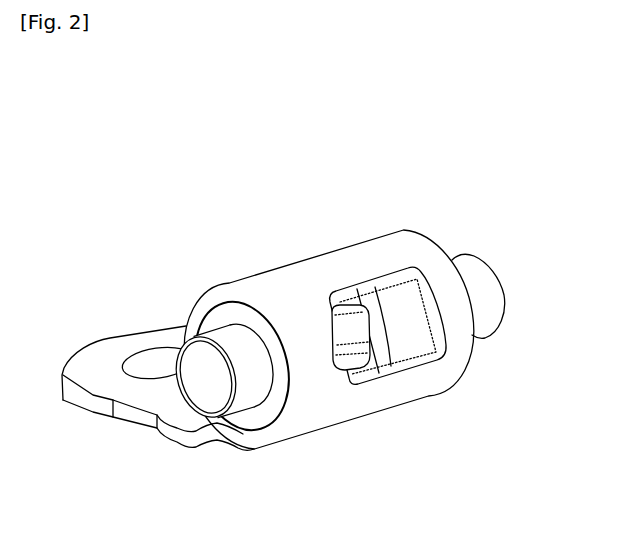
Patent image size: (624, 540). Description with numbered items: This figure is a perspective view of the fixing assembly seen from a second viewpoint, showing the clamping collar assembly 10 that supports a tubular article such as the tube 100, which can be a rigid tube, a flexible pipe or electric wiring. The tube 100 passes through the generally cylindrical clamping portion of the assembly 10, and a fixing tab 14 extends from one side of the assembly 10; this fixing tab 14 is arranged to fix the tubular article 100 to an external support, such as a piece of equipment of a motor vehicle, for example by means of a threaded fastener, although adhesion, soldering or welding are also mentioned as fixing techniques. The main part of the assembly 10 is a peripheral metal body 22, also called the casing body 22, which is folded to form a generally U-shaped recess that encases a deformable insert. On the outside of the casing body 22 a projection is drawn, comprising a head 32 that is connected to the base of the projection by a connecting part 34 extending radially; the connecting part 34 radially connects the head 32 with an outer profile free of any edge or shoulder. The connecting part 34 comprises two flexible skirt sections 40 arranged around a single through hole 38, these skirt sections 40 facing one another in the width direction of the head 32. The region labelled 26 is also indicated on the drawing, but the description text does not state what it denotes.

The clamping collar assembly 10 is at (556, 178).
The fixing tab 14 is at (98, 357).
The peripheral metal body 22 is at (405, 262).
The window 26 is at (380, 273).
The head 32 is at (497, 281).
The connecting part 34 is at (335, 282).
The single through hole 38 is at (328, 325).
The flexible skirt sections 40 is at (383, 340).
The tube 100 is at (248, 380).